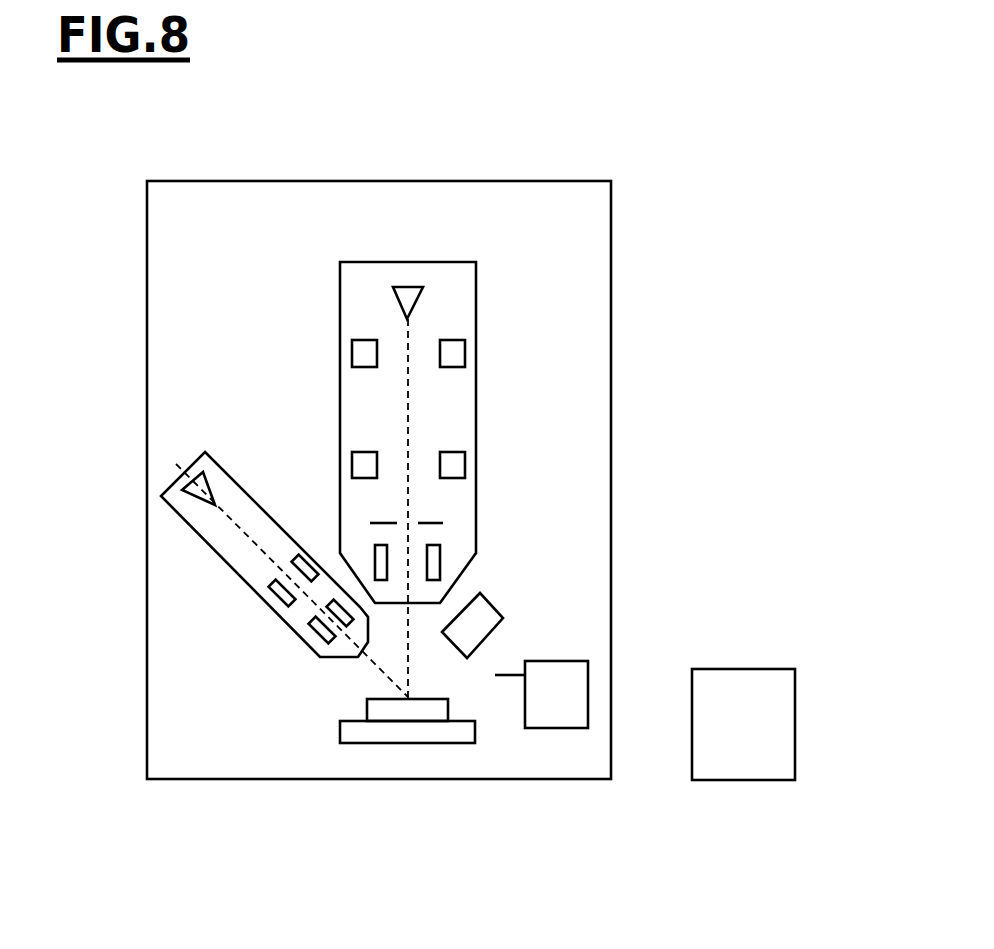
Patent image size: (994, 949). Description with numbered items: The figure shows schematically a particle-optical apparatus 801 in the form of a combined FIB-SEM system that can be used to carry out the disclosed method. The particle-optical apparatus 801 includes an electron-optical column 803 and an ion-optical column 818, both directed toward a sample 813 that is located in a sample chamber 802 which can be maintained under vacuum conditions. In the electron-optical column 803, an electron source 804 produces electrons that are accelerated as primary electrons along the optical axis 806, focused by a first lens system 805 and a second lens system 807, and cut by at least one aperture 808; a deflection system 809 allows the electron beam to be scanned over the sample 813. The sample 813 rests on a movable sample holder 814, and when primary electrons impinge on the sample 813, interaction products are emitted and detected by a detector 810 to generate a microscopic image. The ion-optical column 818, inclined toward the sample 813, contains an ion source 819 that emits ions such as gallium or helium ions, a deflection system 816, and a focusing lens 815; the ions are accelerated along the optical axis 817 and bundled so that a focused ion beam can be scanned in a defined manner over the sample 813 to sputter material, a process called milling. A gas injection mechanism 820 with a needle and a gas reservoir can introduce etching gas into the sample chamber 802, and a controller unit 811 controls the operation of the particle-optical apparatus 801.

The particle-optical apparatus 801 is at (548, 140).
The sample chamber 802 is at (582, 214).
The electron-optical column 803 is at (467, 273).
The electron source 804 is at (412, 305).
The first lens system 805 is at (452, 353).
The optical axis 806 is at (409, 411).
The second lens system 807 is at (452, 465).
The aperture 808 is at (433, 522).
The deflection system 809 is at (435, 562).
The detector 810 is at (502, 612).
The controller unit 811 is at (752, 755).
The sample 813 is at (400, 710).
The movable sample holder 814 is at (353, 735).
The focusing lens 815 is at (313, 637).
The deflection system 816 is at (267, 594).
The optical axis 817 is at (250, 543).
The ion-optical column 818 is at (202, 517).
The ion source 819 is at (188, 483).
The gas injection mechanism 820 is at (558, 728).